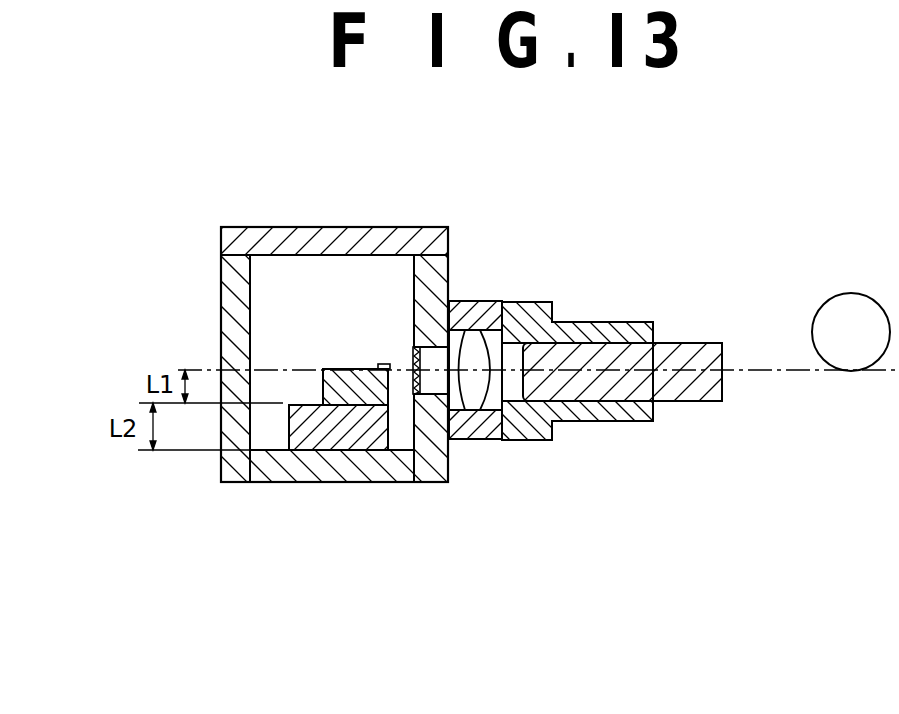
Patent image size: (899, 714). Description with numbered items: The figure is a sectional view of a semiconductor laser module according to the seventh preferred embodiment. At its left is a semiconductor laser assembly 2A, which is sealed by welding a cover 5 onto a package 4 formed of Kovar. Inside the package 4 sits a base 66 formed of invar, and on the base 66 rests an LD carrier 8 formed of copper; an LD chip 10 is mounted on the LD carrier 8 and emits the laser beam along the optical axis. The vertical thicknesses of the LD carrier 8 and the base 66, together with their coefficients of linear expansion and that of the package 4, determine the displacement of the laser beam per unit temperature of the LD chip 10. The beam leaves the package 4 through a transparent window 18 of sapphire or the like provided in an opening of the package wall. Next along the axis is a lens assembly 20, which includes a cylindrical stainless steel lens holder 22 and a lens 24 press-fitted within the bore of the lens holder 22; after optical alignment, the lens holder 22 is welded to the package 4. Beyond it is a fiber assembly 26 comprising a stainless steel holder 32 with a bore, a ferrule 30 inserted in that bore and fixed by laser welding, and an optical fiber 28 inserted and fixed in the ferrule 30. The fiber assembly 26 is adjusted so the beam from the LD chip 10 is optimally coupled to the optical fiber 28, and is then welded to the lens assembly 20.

The semiconductor laser assembly 2A is at (338, 219).
The package 4 is at (267, 475).
The cover 5 is at (280, 235).
The LD carrier 8 is at (329, 369).
The LD chip 10 is at (382, 364).
The transparent window 18 is at (414, 394).
The lens assembly 20 is at (464, 296).
The lens holder 22 is at (483, 440).
The lens 24 is at (478, 338).
The fiber assembly 26 is at (601, 318).
The optical fiber 28 is at (845, 294).
The ferrule 30 is at (692, 352).
The holder 32 is at (610, 413).
The base 66 is at (335, 453).